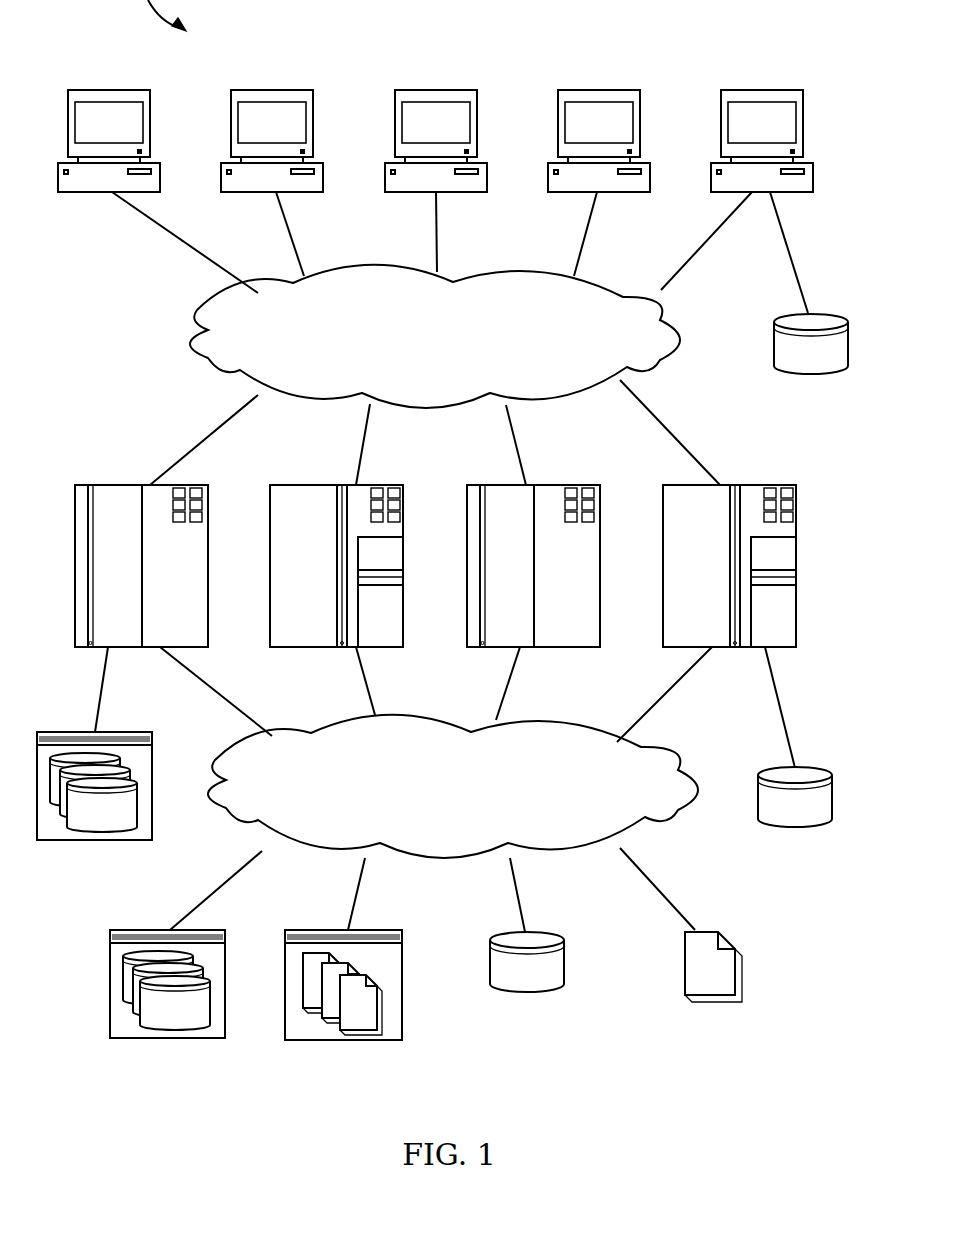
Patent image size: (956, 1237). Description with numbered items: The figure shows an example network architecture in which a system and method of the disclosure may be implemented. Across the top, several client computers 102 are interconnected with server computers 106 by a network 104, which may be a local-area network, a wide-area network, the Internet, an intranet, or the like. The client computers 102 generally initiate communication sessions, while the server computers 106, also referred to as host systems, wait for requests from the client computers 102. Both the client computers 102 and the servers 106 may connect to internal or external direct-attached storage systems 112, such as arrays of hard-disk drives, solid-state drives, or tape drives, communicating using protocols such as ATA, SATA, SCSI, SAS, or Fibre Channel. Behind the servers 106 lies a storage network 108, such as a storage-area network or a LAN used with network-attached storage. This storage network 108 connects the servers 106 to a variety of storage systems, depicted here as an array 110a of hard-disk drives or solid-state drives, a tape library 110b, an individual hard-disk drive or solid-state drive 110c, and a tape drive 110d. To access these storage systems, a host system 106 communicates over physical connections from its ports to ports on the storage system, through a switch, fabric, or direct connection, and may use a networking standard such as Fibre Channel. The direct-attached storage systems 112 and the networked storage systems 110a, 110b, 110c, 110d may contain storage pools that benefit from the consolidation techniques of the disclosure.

The client computer 102 is at (435, 141).
The network 104 is at (435, 336).
The server computer 106 is at (435, 566).
The storage network 108 is at (453, 786).
The array of hard-disk drives or solid-state drives 110a is at (165, 1038).
The tape library 110b is at (345, 1040).
The individual hard-disk drive or solid-state drive 110c is at (523, 992).
The tape drive 110d is at (708, 997).
The direct-attached storage system 112 is at (810, 372).